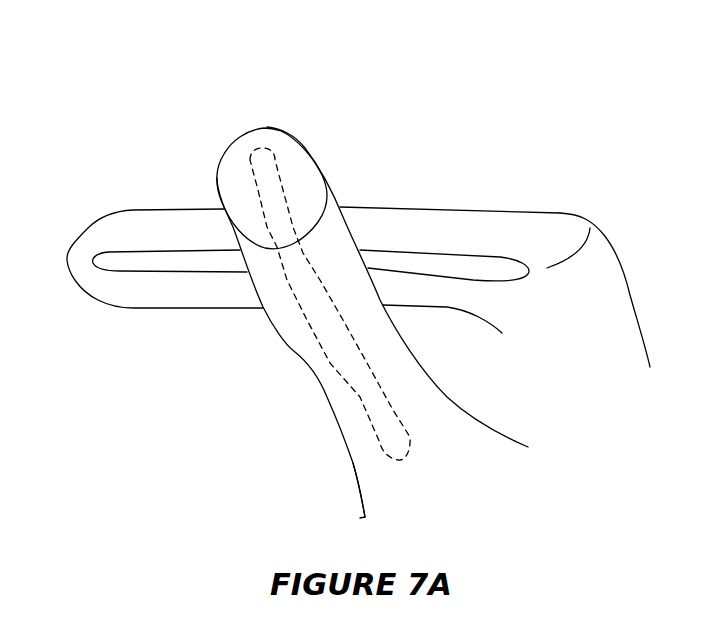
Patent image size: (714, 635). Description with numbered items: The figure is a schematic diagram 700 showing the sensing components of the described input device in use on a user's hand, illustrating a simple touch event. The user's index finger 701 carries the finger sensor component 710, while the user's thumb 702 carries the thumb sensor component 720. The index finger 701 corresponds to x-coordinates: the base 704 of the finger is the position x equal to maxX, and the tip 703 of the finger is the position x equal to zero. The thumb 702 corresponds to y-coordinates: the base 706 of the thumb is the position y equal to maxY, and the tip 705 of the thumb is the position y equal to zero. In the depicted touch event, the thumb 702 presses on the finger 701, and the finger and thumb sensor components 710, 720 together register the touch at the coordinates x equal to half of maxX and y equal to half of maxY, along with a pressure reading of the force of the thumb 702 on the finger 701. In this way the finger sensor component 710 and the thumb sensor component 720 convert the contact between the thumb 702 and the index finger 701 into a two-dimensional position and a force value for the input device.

The schematic diagram 700 is at (178, 68).
The finger 701 is at (398, 213).
The thumb 702 is at (295, 352).
The tip of the finger 703 is at (67, 243).
The base of the finger 704 is at (590, 228).
The tip of the thumb 705 is at (231, 140).
The base of the thumb 706 is at (403, 475).
The finger sensor component 710 is at (468, 258).
The thumb sensor component 720 is at (367, 393).